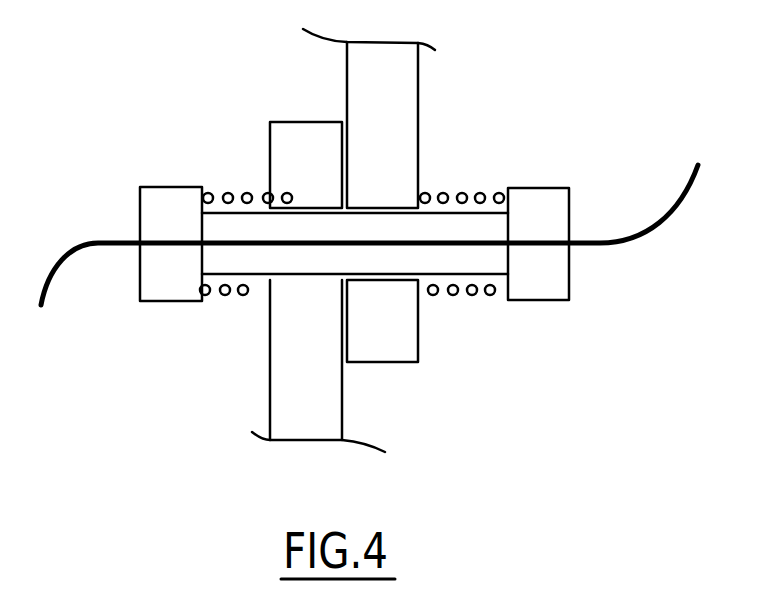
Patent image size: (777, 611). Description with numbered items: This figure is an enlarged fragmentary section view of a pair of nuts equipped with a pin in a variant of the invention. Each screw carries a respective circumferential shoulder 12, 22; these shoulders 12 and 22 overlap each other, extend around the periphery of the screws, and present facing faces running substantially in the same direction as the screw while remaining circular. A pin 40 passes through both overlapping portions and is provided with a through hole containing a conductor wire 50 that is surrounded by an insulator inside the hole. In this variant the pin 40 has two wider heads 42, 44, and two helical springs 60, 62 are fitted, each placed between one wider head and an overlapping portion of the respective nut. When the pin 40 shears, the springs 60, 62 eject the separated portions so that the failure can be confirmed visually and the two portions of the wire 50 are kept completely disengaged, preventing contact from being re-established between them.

The circumferential shoulder 12 is at (297, 365).
The circumferential shoulder 22 is at (385, 343).
The pin 40 is at (443, 250).
The wider head 42 is at (543, 202).
The wider head 44 is at (152, 215).
The conductor wire 50 is at (642, 237).
The helical spring 60 is at (462, 195).
The helical spring 62 is at (228, 195).